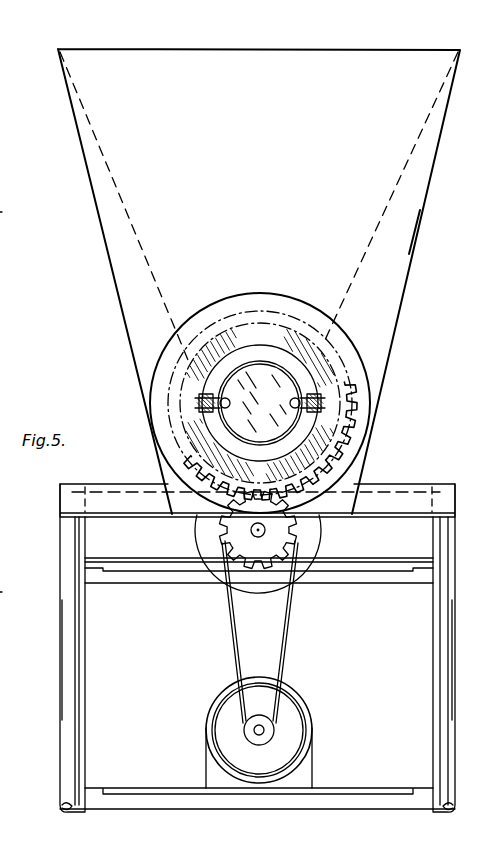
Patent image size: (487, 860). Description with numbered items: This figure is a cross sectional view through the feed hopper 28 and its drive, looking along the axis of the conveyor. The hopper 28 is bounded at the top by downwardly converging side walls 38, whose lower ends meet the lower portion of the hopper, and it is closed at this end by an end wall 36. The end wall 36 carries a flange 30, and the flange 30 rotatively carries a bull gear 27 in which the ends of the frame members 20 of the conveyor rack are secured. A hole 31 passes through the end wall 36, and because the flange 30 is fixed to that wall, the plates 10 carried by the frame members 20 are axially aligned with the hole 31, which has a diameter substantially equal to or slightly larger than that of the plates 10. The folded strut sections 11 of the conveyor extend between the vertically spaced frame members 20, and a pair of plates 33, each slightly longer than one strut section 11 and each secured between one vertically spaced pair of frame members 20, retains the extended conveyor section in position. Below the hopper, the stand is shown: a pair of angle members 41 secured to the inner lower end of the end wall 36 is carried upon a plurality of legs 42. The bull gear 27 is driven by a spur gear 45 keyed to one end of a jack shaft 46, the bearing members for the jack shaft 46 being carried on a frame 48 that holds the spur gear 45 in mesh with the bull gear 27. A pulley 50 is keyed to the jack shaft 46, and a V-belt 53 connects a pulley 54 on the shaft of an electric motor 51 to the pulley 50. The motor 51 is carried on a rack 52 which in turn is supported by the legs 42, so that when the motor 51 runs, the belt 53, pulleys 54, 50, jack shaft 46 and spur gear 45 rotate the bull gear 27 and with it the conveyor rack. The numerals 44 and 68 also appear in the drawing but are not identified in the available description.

The plate 10 is at (258, 370).
The folded strut section 11 is at (289, 403).
The frame member 20 is at (201, 376).
The bull gear 27 is at (356, 418).
The hopper 28 is at (454, 118).
The flange 30 is at (206, 305).
The hole 31 is at (273, 362).
The plate 33 is at (213, 400).
The end wall 36 is at (412, 244).
The side wall 38 is at (128, 208).
The angle member 41 is at (437, 477).
The leg 42 is at (85, 663).
The frame member 44 is at (8, 211).
The spur gear 45 is at (223, 542).
The jack shaft 46 is at (259, 536).
The frame 48 is at (384, 556).
The pulley 50 is at (196, 533).
The electric motor 51 is at (312, 712).
The rack 52 is at (382, 786).
The V-belt 53 is at (225, 655).
The pulley 54 is at (243, 731).
The frame member 68 is at (7, 594).